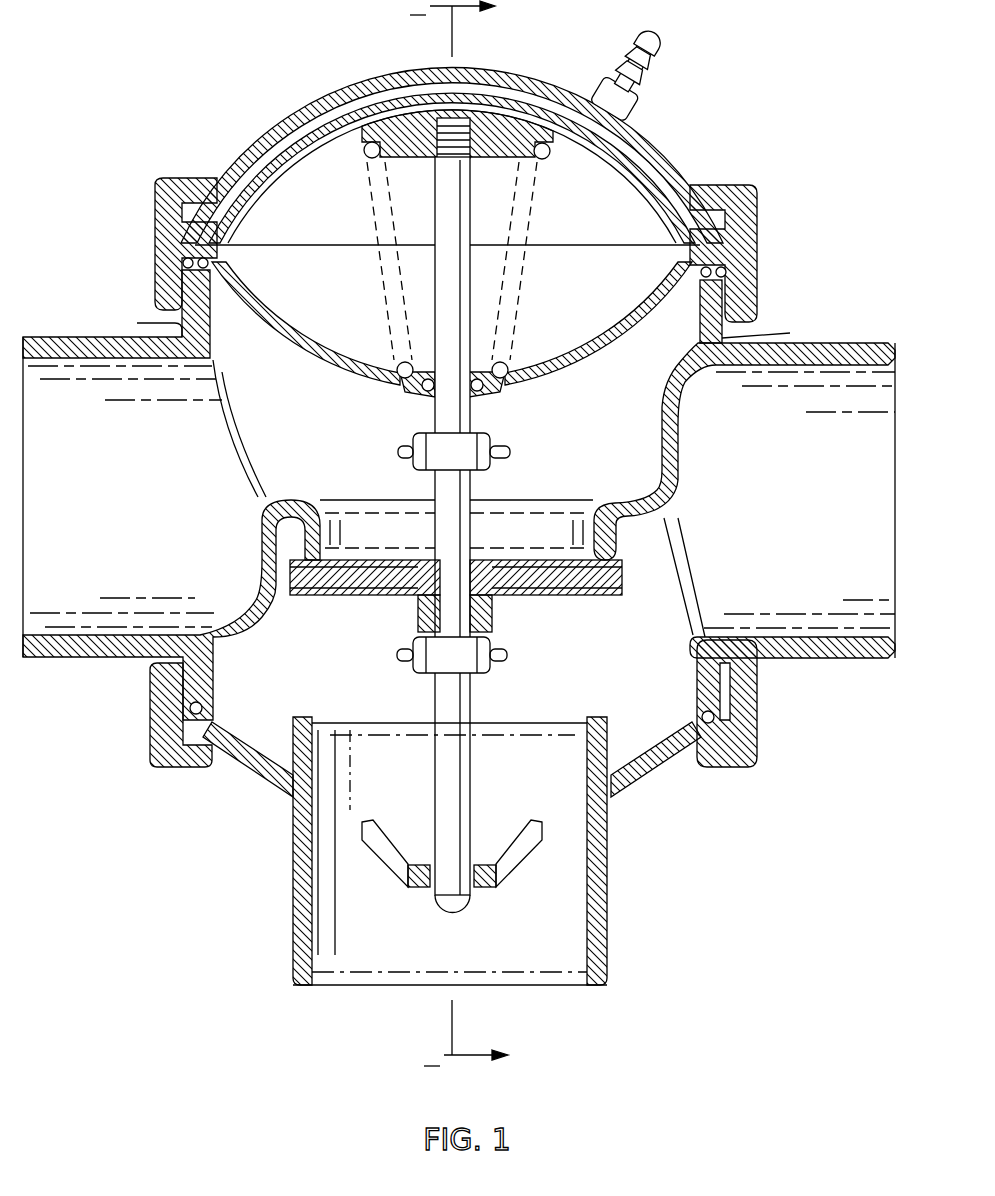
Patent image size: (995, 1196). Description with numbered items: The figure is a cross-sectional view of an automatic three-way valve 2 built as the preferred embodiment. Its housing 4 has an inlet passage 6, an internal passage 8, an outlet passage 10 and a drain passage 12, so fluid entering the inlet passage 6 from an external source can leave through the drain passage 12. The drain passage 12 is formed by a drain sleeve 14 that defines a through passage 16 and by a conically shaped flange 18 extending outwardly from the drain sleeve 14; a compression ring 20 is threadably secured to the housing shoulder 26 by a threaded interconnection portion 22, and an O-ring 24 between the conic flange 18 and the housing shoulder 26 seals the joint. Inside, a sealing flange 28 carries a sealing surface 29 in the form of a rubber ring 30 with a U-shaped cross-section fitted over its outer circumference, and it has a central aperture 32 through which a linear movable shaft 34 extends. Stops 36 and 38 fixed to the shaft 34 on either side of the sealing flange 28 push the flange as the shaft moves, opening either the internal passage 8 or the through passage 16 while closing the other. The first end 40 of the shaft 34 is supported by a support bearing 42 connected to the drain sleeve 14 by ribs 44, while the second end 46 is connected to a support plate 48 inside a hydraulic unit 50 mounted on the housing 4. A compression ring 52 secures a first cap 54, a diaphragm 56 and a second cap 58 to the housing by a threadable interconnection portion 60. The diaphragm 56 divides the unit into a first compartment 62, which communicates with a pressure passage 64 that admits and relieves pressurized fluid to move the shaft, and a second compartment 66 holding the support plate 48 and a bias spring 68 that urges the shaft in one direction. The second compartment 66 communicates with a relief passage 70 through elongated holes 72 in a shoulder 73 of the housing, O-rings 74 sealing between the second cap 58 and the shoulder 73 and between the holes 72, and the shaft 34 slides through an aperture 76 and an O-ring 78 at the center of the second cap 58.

The automatic three-way valve 2 is at (255, 96).
The housing 4 is at (137, 323).
The inlet passage 6 is at (831, 516).
The internal passage 8 is at (537, 530).
The outlet passage 10 is at (74, 508).
The drain passage 12 is at (370, 958).
The drain sleeve 14 is at (602, 908).
The through passage 16 is at (375, 718).
The conically shaped flange 18 is at (642, 768).
The compression ring 20 is at (754, 748).
The threaded interconnection portion 22 is at (726, 688).
The O-ring 24 is at (702, 713).
The housing shoulder 26 is at (208, 682).
The sealing flange 28 is at (534, 578).
The sealing surface 29 is at (298, 620).
The rubber ring 30 is at (597, 596).
The aperture 32 is at (447, 605).
The linear movable shaft 34 is at (450, 492).
The stop 36 is at (492, 466).
The stop 38 is at (491, 672).
The first end 40 is at (456, 904).
The support bearing 42 is at (417, 888).
The ribs 44 is at (384, 856).
The second end 46 is at (448, 137).
The support plate 48 is at (494, 125).
The hydraulic unit 50 is at (690, 125).
The compression ring 52 is at (760, 240).
The first cap 54 is at (358, 88).
The diaphragm 56 is at (641, 178).
The second cap 58 is at (323, 363).
The threadable interconnection portion 60 is at (737, 300).
The first compartment 62 is at (570, 110).
The pressure passage 64 is at (650, 50).
The second compartment 66 is at (325, 200).
The bias spring 68 is at (548, 156).
The relief passage 70 is at (745, 335).
The elongated holes 72 is at (710, 305).
The shoulder 73 is at (203, 313).
The O-rings 74 is at (223, 306).
The aperture 76 is at (460, 407).
The O-ring 78 is at (446, 294).